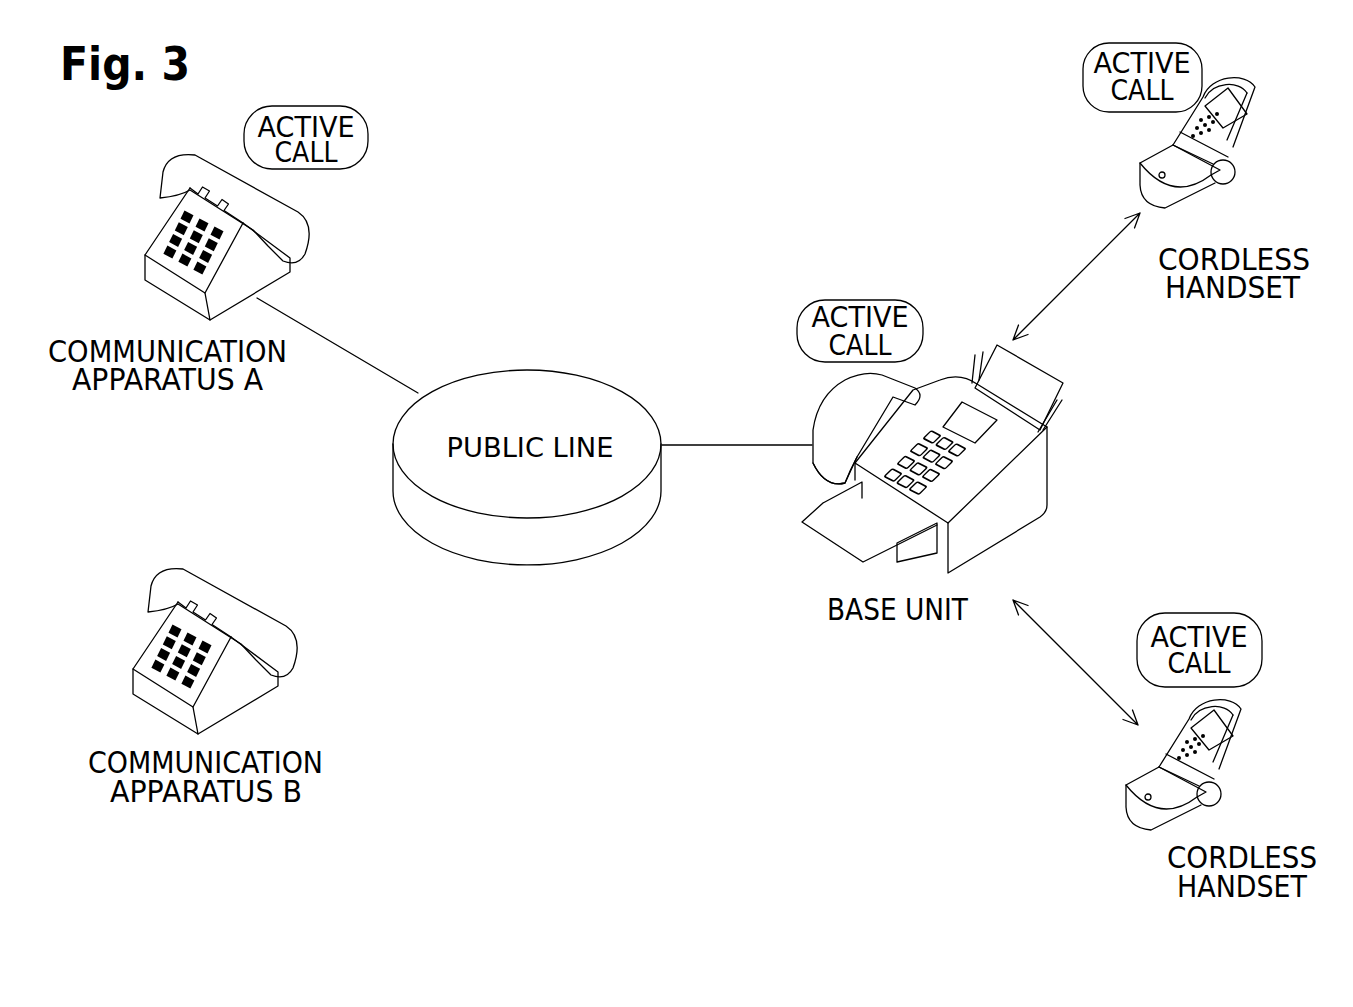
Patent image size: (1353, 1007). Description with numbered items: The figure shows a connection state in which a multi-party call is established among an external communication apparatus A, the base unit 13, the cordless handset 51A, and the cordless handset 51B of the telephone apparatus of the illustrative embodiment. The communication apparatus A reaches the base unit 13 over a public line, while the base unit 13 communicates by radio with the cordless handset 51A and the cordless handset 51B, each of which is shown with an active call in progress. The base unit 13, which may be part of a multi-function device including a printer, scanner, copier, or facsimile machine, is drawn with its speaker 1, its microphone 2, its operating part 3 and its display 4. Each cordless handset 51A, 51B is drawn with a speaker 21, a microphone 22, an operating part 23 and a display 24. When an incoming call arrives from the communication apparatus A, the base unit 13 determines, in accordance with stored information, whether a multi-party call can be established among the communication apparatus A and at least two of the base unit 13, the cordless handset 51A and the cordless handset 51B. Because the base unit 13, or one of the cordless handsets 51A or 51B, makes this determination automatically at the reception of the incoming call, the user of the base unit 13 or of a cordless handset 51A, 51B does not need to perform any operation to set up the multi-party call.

The speaker 1 is at (895, 383).
The microphone 2 is at (825, 458).
The operating part 3 is at (937, 478).
The display 4 is at (978, 432).
The base unit 13 is at (960, 456).
The speaker 21 is at (1226, 91).
The microphone 22 is at (1162, 175).
The operating part 23 is at (1205, 125).
The display 24 is at (1226, 108).
The cordless handset 51A is at (1192, 130).
The cordless handset 51B is at (1265, 713).